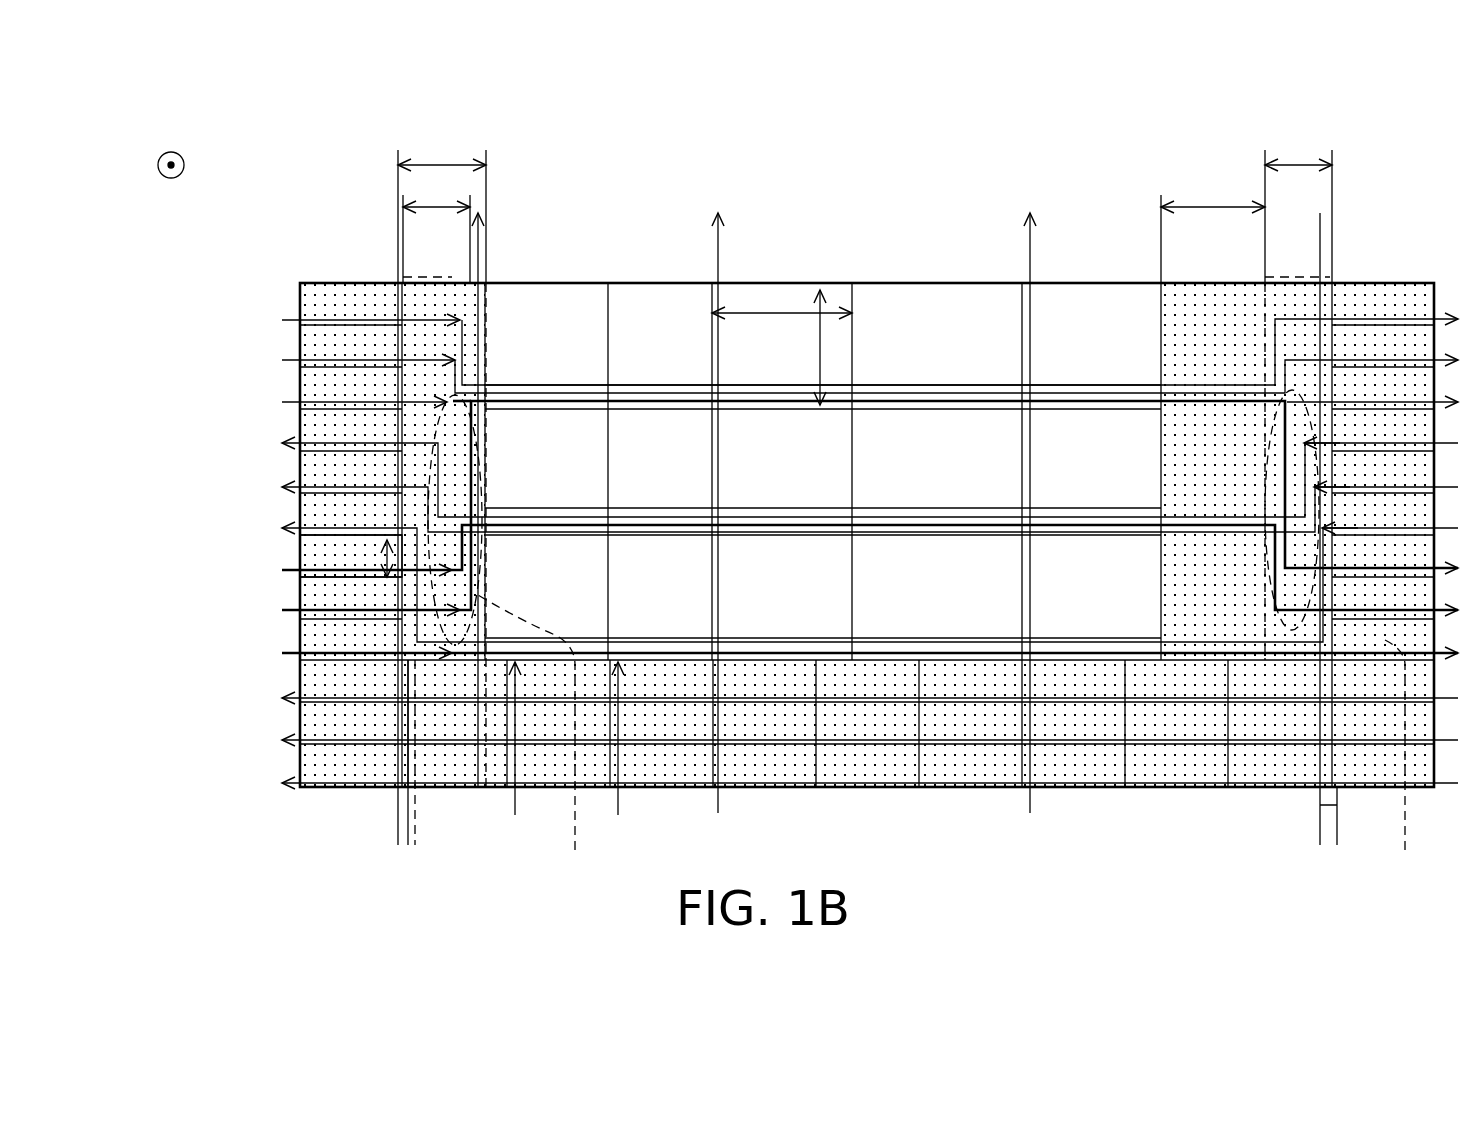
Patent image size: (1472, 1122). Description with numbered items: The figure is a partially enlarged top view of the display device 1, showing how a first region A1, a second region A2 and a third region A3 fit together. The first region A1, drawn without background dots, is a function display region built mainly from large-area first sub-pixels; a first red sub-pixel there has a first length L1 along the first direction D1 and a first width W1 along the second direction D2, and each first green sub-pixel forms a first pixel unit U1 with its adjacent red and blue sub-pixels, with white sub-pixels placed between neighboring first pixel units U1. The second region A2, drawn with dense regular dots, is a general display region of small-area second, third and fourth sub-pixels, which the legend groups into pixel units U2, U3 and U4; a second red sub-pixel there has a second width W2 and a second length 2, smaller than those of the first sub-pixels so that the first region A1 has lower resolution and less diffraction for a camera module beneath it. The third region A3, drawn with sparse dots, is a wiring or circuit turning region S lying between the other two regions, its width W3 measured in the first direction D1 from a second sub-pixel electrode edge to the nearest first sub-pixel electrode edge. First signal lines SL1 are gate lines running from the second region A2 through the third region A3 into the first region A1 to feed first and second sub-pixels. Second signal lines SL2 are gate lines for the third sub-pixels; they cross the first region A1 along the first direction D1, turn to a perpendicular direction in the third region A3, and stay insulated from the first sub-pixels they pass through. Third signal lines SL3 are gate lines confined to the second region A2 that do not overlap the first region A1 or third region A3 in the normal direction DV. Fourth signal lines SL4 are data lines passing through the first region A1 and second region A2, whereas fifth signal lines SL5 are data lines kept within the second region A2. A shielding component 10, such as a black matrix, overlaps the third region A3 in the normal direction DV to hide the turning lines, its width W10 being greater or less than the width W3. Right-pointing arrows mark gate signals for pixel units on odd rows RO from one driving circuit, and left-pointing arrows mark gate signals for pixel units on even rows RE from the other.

The display device 1 is at (1455, 899).
The second length 2 is at (342, 552).
The shielding component 10 is at (866, 248).
The first region A1 is at (936, 234).
The second region A2 is at (340, 234).
The third region A3 is at (922, 234).
The first signal line SL1 is at (800, 536).
The second signal line SL2 is at (800, 470).
The third signal line SL3 is at (846, 738).
The fourth signal line SL4 is at (796, 503).
The fifth signal line SL5 is at (568, 759).
The circuit turning region S is at (922, 580).
The first width W1 is at (839, 347).
The second width W2 is at (324, 573).
The width of the third region W3 is at (869, 523).
The width of the shielding component W10 is at (865, 202).
The first length L1 is at (782, 294).
The first pixel unit U1 is at (576, 155).
The second pixel unit U2 is at (701, 155).
The third pixel unit U3 is at (846, 155).
The fourth pixel unit U4 is at (971, 155).
The odd number of rows RO is at (110, 482).
The even number of rows RE is at (110, 610).
The first direction D1 is at (185, 165).
The second direction D2 is at (171, 160).
The normal direction DV is at (171, 183).